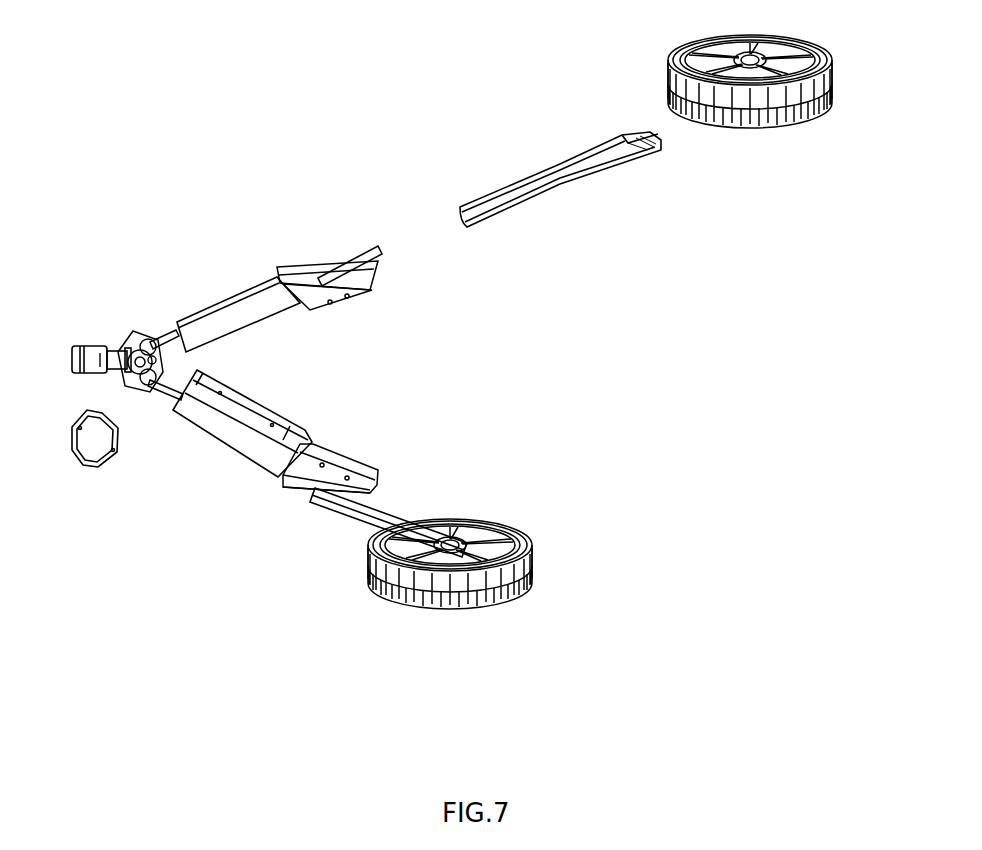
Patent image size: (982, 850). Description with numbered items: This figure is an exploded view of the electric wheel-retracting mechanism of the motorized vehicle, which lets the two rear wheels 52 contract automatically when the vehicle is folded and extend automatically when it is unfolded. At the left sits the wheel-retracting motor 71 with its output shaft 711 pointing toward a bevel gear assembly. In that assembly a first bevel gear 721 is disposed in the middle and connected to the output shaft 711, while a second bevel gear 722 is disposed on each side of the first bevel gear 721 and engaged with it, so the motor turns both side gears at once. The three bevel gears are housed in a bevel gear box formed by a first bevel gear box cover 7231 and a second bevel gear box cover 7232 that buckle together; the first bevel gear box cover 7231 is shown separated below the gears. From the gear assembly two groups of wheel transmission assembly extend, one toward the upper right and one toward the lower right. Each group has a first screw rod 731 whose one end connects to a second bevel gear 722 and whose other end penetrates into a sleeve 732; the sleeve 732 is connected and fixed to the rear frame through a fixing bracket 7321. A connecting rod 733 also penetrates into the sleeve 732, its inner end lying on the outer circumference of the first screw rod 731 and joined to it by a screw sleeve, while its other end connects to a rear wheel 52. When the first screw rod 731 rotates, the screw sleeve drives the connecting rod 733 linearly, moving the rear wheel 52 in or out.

The rear wheel 52 is at (790, 112).
The wheel-retracting motor 71 is at (90, 348).
The output shaft 711 is at (108, 368).
The first bevel gear 721 is at (165, 368).
The second bevel gear 722 is at (140, 343).
The first bevel gear box cover 7231 is at (85, 467).
The second bevel gear box cover 7232 is at (150, 343).
The first screw rod 731 is at (347, 270).
The sleeve 732 is at (240, 315).
The fixing bracket 7321 is at (350, 302).
The connecting rod 733 is at (563, 183).